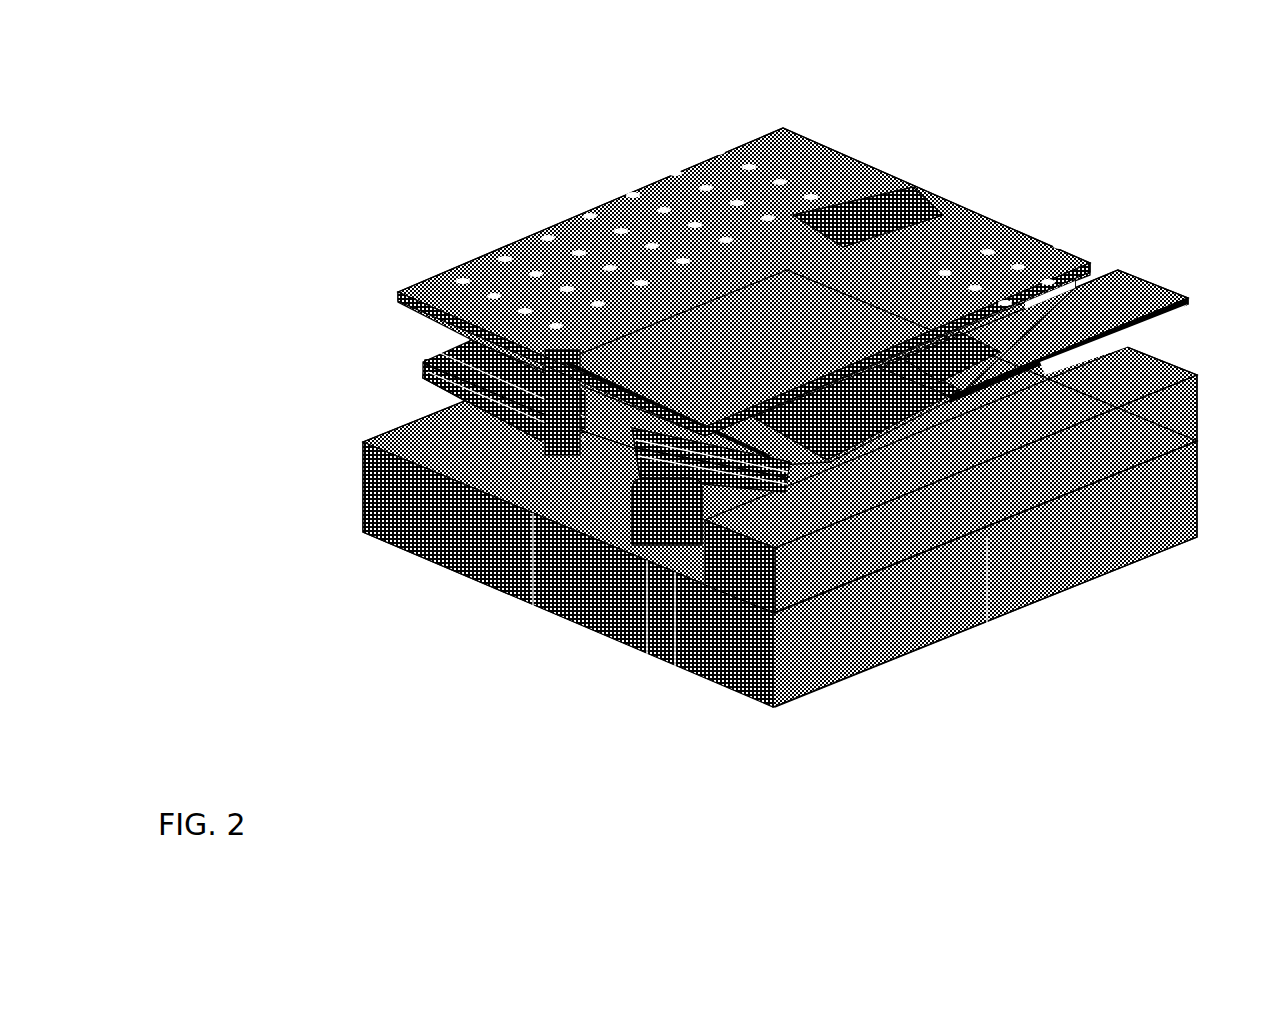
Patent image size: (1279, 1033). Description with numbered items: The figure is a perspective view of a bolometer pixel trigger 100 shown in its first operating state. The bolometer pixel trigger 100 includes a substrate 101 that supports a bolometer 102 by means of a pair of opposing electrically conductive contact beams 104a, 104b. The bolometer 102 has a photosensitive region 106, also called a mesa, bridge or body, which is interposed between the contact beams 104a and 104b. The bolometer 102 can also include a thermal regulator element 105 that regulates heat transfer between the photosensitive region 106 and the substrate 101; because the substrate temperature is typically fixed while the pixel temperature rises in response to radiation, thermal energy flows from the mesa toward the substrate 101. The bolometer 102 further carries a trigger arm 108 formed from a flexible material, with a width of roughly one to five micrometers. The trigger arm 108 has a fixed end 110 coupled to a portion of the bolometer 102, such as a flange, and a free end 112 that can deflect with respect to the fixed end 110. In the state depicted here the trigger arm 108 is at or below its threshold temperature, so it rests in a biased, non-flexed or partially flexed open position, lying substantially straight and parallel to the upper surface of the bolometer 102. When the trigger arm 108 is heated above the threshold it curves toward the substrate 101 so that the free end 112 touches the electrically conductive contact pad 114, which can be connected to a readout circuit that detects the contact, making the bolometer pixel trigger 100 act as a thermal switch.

The bolometer pixel trigger 100 is at (340, 215).
The substrate 101 is at (483, 570).
The bolometer 102 is at (558, 213).
The electrically conductive contact beam 104a is at (527, 430).
The electrically conductive contact beam 104b is at (920, 187).
The thermal regulator element 105 is at (440, 360).
The photosensitive region 106 is at (790, 395).
The trigger arm 108 is at (950, 357).
The fixed end 110 is at (797, 415).
The free end 112 is at (1118, 293).
The contact pad 114 is at (1135, 383).